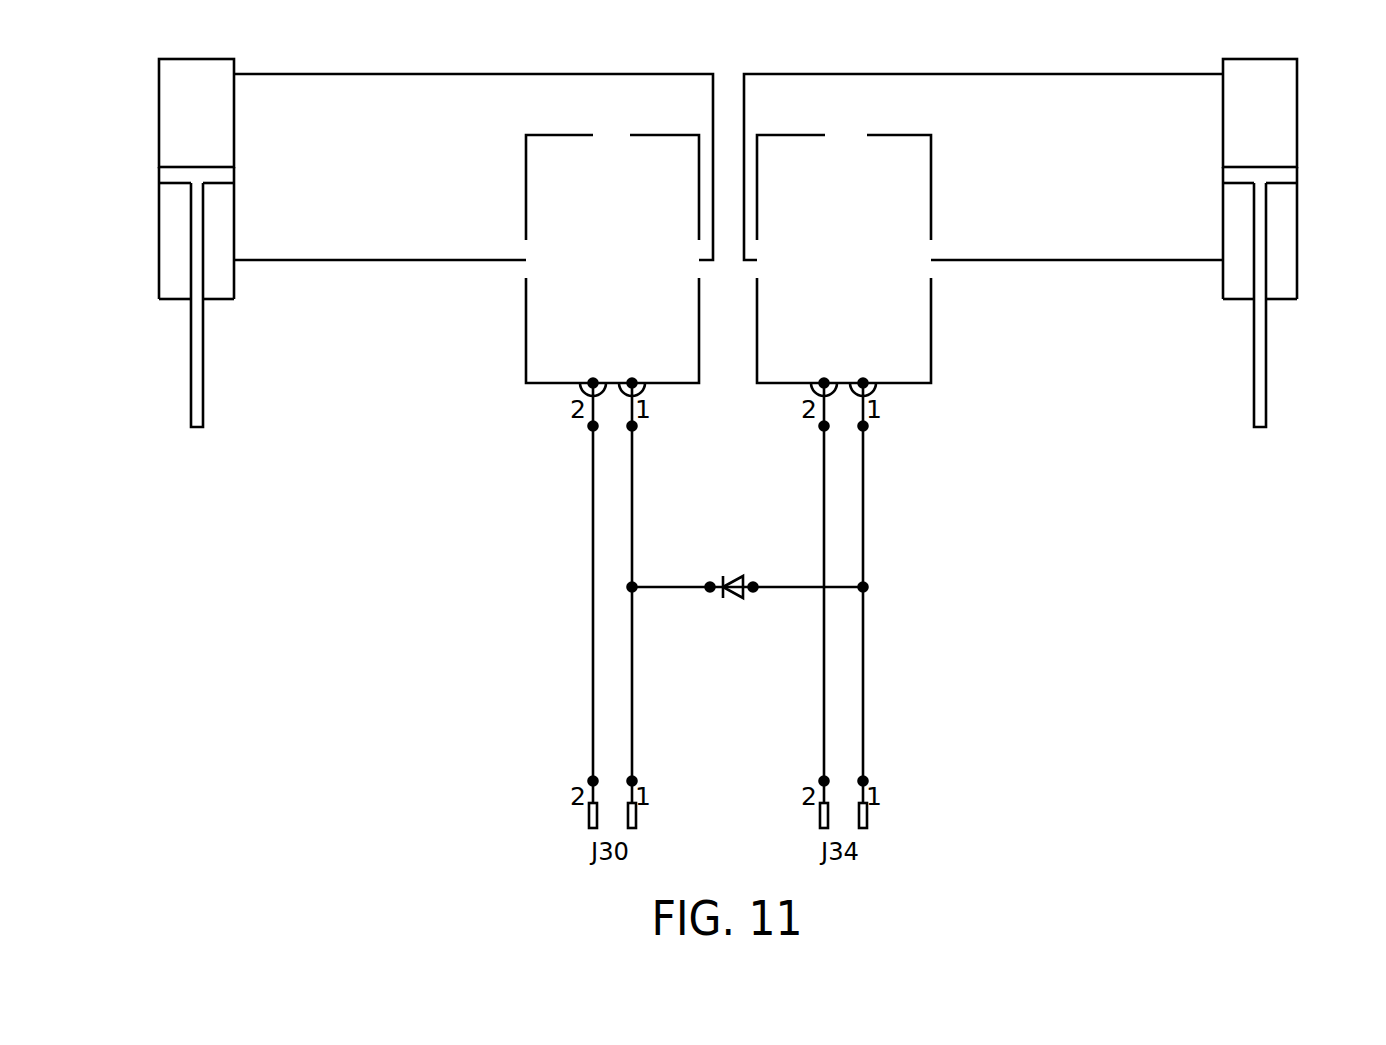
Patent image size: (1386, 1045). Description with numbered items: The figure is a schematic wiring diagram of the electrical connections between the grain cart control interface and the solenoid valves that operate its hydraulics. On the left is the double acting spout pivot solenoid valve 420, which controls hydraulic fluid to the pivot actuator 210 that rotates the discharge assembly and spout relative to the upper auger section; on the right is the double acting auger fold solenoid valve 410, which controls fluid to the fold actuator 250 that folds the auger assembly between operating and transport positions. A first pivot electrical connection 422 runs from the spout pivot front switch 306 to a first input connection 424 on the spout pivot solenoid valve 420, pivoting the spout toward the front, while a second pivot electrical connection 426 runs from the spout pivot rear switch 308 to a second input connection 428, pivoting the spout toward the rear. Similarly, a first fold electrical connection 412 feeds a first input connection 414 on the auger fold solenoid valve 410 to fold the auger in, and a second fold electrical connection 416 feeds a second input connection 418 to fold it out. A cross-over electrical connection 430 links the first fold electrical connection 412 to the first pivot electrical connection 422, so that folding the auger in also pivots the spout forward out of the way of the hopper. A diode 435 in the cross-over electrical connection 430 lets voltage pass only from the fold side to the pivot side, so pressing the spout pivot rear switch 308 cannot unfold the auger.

The pivot actuator 210 is at (159, 236).
The fold actuator 250 is at (1297, 236).
The spout pivot solenoid valve 420 is at (526, 178).
The auger fold solenoid valve 410 is at (931, 179).
The second input connection 428 is at (582, 389).
The first input connection 424 is at (630, 400).
The second pivot electrical connection 426 is at (593, 661).
The first pivot electrical connection 422 is at (632, 721).
The first input connection 414 is at (876, 391).
The second input connection 418 is at (826, 396).
The first fold electrical connection 412 is at (863, 485).
The second fold electrical connection 416 is at (825, 691).
The cross-over electrical connection 430 is at (790, 588).
The diode 435 is at (733, 576).
The spout pivot rear switch 308 is at (589, 822).
The spout pivot front switch 306 is at (636, 822).